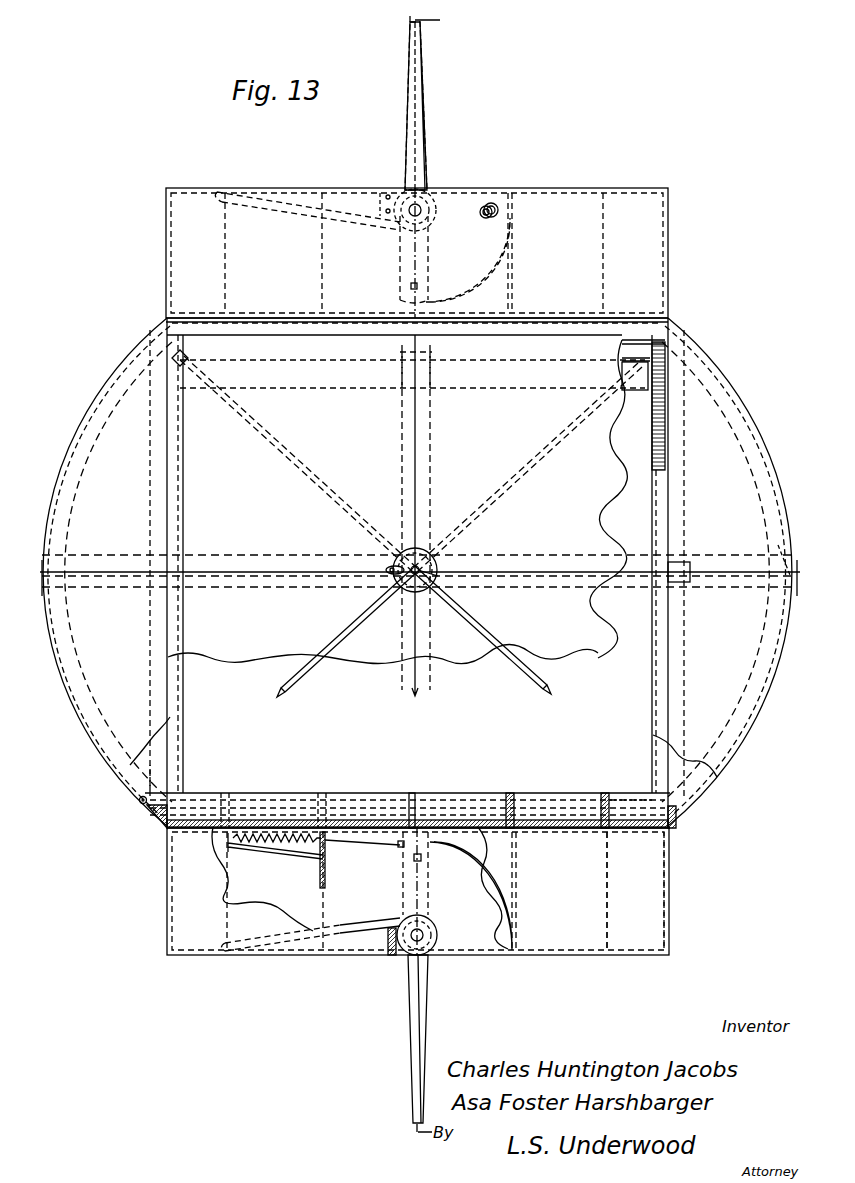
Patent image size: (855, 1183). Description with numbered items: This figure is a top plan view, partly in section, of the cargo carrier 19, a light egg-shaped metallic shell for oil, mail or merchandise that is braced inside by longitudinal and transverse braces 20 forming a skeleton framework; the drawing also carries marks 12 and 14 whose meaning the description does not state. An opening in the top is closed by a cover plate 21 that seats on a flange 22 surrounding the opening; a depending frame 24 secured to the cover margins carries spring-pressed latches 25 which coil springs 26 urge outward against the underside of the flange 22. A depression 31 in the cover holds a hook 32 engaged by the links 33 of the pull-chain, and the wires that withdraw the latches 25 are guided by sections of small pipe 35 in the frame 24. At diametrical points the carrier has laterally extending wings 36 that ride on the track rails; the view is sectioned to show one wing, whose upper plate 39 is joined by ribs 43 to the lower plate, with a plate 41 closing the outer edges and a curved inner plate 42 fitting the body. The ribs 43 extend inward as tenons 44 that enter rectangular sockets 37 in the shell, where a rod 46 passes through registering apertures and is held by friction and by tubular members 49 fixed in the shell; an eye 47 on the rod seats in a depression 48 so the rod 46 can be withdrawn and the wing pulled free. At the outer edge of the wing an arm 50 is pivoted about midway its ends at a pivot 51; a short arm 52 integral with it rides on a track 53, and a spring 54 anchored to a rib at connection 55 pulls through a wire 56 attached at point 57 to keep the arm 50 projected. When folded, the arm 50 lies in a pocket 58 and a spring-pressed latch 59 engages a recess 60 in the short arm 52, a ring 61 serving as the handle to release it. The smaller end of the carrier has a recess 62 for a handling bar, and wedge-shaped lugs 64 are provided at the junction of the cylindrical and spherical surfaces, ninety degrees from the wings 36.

The axle / transverse axis 12 is at (421, 575).
The mast tips 14 is at (420, 580).
The cargo carrier 19 is at (417, 572).
The longitudinal and transverse braces 20 is at (648, 756).
The cover plate 21 is at (560, 647).
The flange 22 is at (677, 318).
The depending frame 24 is at (643, 396).
The spring-pressed latches 25 is at (183, 358).
The coil springs 26 is at (620, 372).
The depression 31 is at (425, 558).
The hook 32 is at (382, 566).
The links 33 is at (440, 576).
The sections of small pipe 35 is at (402, 676).
The wings 36 is at (620, 945).
The sockets 37 is at (602, 793).
The upper plate 39 is at (635, 891).
The plate 41 is at (475, 955).
The inner plate 42 is at (438, 828).
The ribs 43 is at (515, 882).
The tenons 44 is at (407, 812).
The rod 46 is at (622, 800).
The eye 47 is at (138, 806).
The depression 48 is at (138, 798).
The tubular members 49 is at (150, 815).
The pivoted arm 50 is at (410, 1040).
The pivot 51 is at (423, 935).
The short arm 52 is at (403, 888).
The track 53 is at (490, 885).
The spring 54 is at (277, 826).
The spring connection 55 is at (275, 852).
The wire 56 is at (362, 854).
The wire connection 57 is at (399, 846).
The pocket 58 is at (355, 945).
The spring-pressed latch 59 is at (485, 216).
The recess 60 is at (421, 860).
The ring 61 is at (494, 203).
The recess 62 is at (786, 560).
The wedge-shaped lugs 64 is at (688, 565).